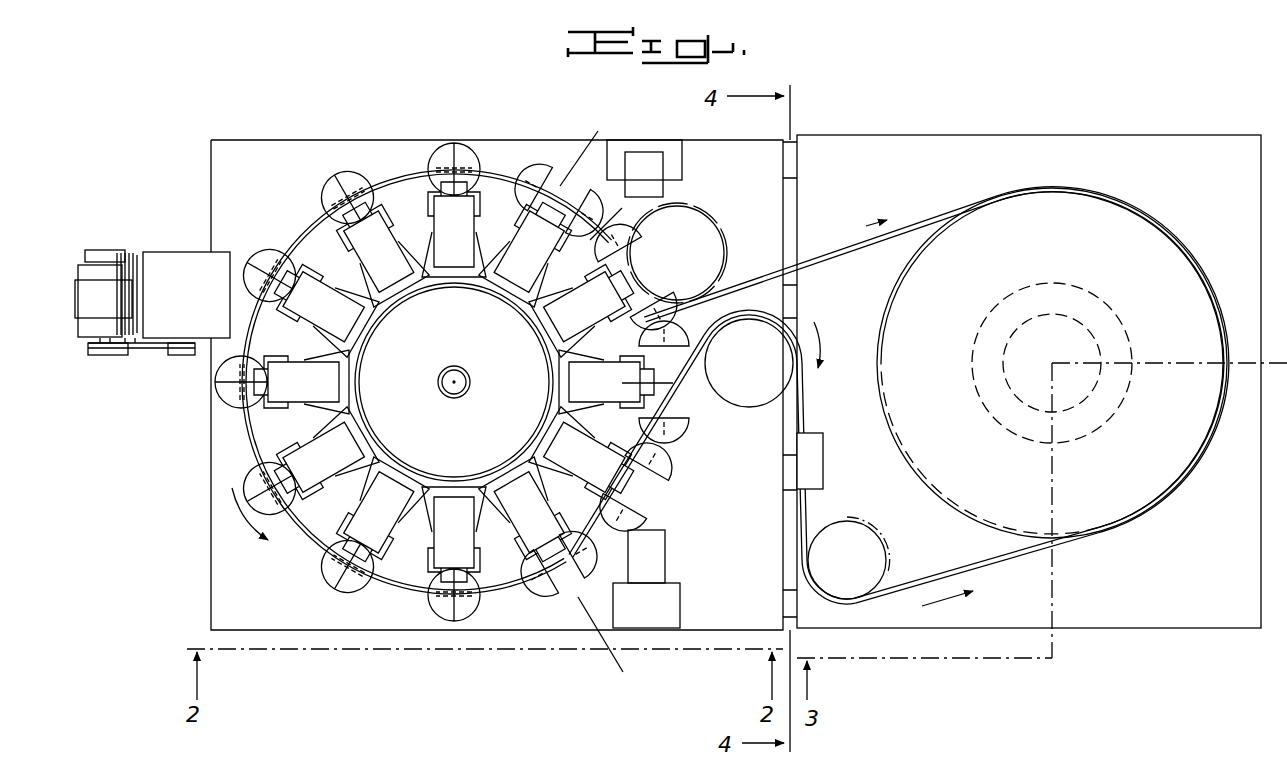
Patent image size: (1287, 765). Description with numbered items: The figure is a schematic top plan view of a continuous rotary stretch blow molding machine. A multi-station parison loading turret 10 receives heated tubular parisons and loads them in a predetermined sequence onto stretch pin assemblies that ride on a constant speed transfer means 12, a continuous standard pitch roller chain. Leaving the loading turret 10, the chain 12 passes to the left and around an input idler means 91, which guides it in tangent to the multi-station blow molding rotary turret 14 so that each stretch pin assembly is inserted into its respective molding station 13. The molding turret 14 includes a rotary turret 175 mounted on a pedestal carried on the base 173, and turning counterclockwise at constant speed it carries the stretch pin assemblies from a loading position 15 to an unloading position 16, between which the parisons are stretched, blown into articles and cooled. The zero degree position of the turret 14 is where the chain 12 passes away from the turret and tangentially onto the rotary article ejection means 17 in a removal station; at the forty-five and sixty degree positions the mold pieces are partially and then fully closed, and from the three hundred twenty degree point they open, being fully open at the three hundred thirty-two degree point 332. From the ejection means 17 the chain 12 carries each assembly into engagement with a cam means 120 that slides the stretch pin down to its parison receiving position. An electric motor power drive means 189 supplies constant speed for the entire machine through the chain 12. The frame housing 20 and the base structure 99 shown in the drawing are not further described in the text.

The multi-station parison loading turret 10 is at (1147, 516).
The transfer means 12 is at (828, 252).
The molding station 13 is at (457, 142).
The multi-station blow molding rotary turret 14 is at (378, 170).
The loading position 15 is at (645, 272).
The unloading position 16 is at (697, 388).
The article ejection means 17 is at (762, 414).
The frame housing 20 is at (1200, 628).
The input idler means 91 is at (706, 208).
The base plate 99 is at (537, 624).
The cam means 120 is at (826, 460).
The base 173 is at (343, 634).
The rotary turret 175 is at (470, 343).
The electric motor power drive means 189 is at (178, 250).
The gripper unit 332 is at (641, 441).